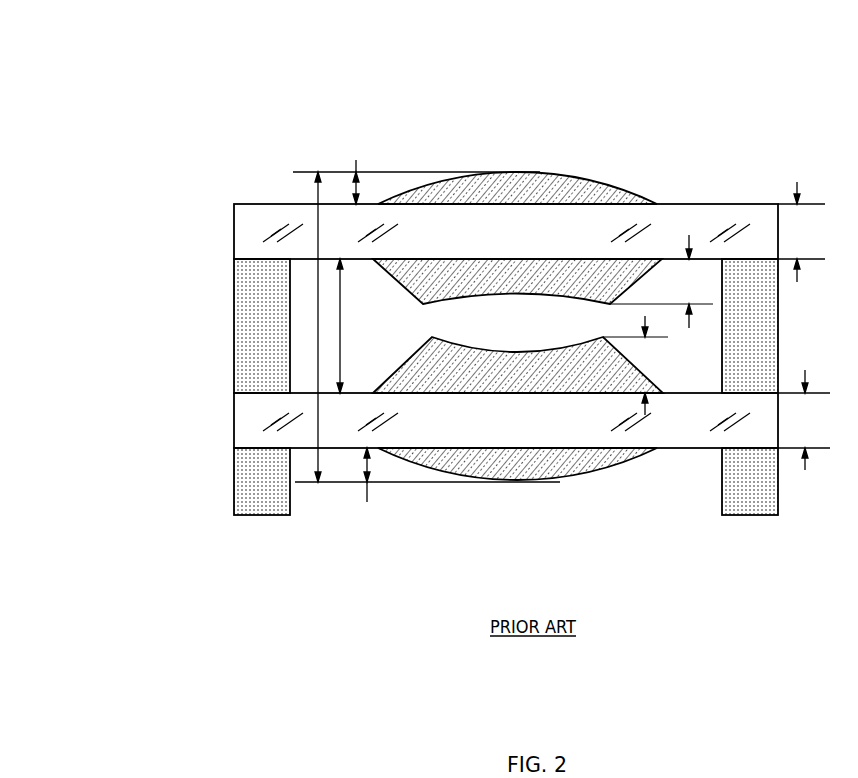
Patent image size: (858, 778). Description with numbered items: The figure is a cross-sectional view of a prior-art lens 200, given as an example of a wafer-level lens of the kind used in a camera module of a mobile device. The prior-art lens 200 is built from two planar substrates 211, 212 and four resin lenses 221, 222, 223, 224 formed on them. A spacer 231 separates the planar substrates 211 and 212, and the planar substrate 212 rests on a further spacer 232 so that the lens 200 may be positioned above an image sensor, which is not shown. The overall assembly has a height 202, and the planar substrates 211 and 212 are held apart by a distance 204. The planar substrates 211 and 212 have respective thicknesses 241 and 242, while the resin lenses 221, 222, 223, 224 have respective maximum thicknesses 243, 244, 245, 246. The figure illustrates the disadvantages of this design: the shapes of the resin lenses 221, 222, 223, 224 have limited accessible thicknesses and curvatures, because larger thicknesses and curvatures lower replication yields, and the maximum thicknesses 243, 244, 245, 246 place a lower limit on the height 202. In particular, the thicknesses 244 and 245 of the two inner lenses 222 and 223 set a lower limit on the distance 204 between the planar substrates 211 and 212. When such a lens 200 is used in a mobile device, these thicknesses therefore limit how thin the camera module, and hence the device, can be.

The prior-art lens 200 is at (130, 42).
The height 202 is at (317, 327).
The distance 204 is at (341, 326).
The planar substrate 211 is at (506, 231).
The planar substrate 212 is at (506, 420).
The resin lens 221 is at (557, 198).
The resin lens 222 is at (559, 286).
The resin lens 223 is at (559, 380).
The resin lens 224 is at (560, 475).
The spacer 231 is at (277, 336).
The spacer 232 is at (277, 488).
The thickness 241 is at (801, 232).
The thickness 242 is at (804, 420).
The maximum thickness 243 is at (356, 171).
The maximum thickness 244 is at (690, 281).
The maximum thickness 245 is at (650, 365).
The maximum thickness 246 is at (367, 486).